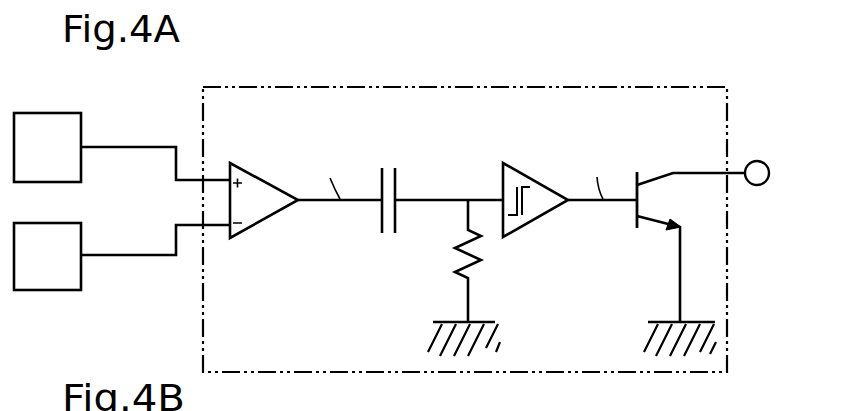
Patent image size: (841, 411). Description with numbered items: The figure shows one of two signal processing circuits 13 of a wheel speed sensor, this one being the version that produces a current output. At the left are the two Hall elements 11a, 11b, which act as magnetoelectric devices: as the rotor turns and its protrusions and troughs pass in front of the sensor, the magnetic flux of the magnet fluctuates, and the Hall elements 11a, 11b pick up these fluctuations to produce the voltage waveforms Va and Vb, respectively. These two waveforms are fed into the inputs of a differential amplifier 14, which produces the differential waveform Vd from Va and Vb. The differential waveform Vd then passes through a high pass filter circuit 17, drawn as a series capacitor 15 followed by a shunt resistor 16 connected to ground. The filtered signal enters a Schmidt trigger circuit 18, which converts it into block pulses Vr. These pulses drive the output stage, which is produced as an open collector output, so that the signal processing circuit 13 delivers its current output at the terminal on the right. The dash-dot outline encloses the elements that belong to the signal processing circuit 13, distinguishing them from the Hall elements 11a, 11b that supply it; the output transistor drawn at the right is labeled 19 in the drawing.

The Hall element 11a is at (38, 147).
The Hall element 11b is at (60, 267).
The signal processing circuit 13 is at (475, 372).
The differential amplifier 14 is at (262, 200).
The capacitor 15 is at (387, 237).
The resistor 16 is at (455, 255).
The high pass filter circuit 17 is at (412, 318).
The Schmidt trigger circuit 18 is at (537, 204).
The output transistor 19 is at (660, 205).